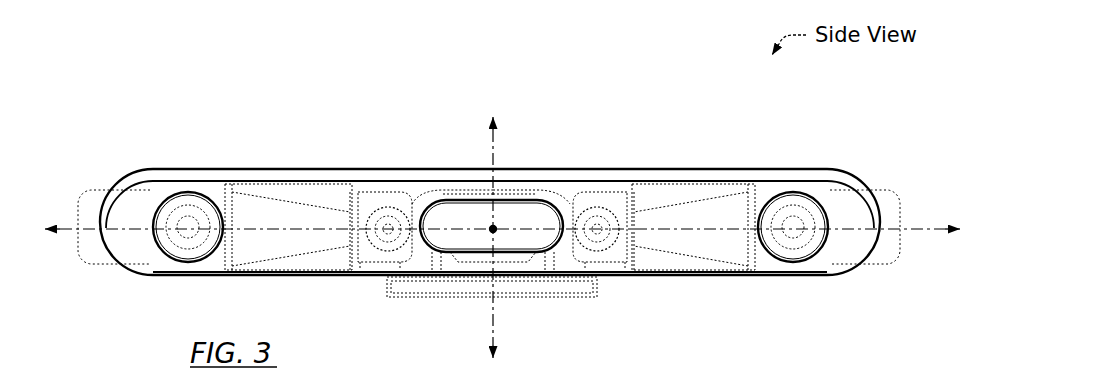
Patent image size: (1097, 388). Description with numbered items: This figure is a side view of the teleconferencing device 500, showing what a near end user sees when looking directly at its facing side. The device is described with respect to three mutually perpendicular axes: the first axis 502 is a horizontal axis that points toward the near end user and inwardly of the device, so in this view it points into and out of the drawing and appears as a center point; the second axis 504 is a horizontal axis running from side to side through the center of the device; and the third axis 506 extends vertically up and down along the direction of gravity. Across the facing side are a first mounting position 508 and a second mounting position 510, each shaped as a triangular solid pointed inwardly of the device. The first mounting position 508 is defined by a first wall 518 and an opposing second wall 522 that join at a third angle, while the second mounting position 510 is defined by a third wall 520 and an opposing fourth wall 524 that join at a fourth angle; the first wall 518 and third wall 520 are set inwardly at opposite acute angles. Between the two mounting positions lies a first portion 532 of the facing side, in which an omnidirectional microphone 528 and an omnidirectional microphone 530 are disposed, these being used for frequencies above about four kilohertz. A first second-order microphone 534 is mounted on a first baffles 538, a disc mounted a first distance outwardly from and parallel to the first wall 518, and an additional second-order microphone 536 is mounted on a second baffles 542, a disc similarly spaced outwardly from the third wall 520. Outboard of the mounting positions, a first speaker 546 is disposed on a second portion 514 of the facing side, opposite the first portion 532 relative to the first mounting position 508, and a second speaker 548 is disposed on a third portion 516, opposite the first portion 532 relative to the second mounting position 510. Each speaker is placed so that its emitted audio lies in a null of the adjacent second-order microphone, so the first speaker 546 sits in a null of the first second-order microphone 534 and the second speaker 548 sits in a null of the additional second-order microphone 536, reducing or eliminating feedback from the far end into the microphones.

The teleconferencing device 500 is at (153, 143).
The first axis 502 is at (497, 233).
The second axis 504 is at (928, 233).
The third axis 506 is at (499, 148).
The first mounting position 508 is at (370, 198).
The second mounting position 510 is at (608, 198).
The second portion 514 is at (120, 240).
The third portion 516 is at (853, 245).
The first wall 518 is at (418, 253).
The third wall 520 is at (568, 255).
The second wall 522 is at (322, 259).
The fourth wall 524 is at (700, 259).
The omnidirectional microphone 528 is at (443, 190).
The omnidirectional microphone 530 is at (538, 193).
The first portion 532 is at (472, 193).
The first second-order microphone 534 is at (386, 230).
The additional second-order microphone 536 is at (600, 229).
The first baffles 538 is at (387, 258).
The second baffles 542 is at (600, 258).
The first speaker 546 is at (180, 250).
The second speaker 548 is at (795, 243).